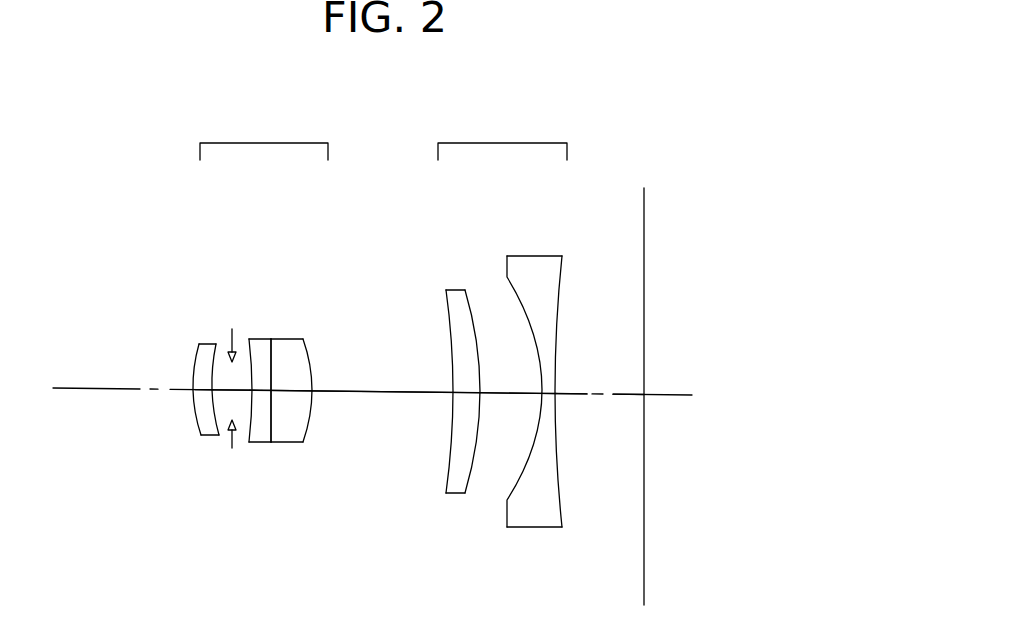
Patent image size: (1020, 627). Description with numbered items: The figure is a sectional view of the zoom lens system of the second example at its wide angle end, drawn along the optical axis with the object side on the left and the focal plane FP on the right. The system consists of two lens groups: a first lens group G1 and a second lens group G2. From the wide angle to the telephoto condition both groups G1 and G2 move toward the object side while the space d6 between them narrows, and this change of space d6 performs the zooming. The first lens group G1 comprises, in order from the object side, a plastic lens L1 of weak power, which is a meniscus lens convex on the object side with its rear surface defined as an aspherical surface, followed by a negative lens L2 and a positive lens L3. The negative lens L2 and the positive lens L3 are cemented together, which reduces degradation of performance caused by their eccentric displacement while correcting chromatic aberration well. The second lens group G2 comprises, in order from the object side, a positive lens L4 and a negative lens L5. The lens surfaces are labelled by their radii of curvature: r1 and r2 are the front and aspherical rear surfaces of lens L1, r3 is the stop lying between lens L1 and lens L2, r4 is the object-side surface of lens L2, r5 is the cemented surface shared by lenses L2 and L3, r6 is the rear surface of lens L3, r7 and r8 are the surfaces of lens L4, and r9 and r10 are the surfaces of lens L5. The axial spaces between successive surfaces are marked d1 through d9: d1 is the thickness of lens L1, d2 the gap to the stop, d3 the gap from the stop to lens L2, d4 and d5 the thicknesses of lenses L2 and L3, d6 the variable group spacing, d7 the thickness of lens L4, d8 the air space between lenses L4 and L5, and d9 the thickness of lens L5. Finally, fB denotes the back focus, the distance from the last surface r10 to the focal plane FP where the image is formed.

The first lens group G1 is at (261, 273).
The second lens group G2 is at (502, 316).
The plastic lens L1 is at (197, 302).
The negative lens L2 is at (260, 306).
The positive lens L3 is at (314, 306).
The positive lens L4 is at (441, 331).
The negative lens L5 is at (550, 348).
The radius of curvature of first lens surface r1 is at (199, 344).
The radius of curvature of second lens surface r2 is at (216, 344).
The radius of curvature of third lens surface r3 is at (237, 366).
The radius of curvature of fourth lens surface r4 is at (251, 353).
The radius of curvature of fifth lens surface r5 is at (271, 355).
The radius of curvature of sixth lens surface r6 is at (305, 353).
The radius of curvature of seventh lens surface r7 is at (447, 306).
The radius of curvature of eighth lens surface r8 is at (467, 310).
The radius of curvature of ninth lens surface r9 is at (521, 290).
The radius of curvature of tenth lens surface r10 is at (562, 283).
The space between first and second lens surfaces d1 is at (196, 402).
The space between second and third lens surfaces d2 is at (219, 436).
The space between third and fourth lens surfaces d3 is at (243, 398).
The space between fourth and fifth lens surfaces d4 is at (262, 393).
The space between fifth and sixth lens surfaces d5 is at (296, 393).
The space between first and second lens groups d6 is at (382, 410).
The space between seventh and eighth lens surfaces d7 is at (467, 393).
The space between eighth and ninth lens surfaces d8 is at (511, 412).
The space between ninth and tenth lens surfaces d9 is at (548, 393).
The back focus fB is at (628, 393).
The focal plane FP is at (646, 197).